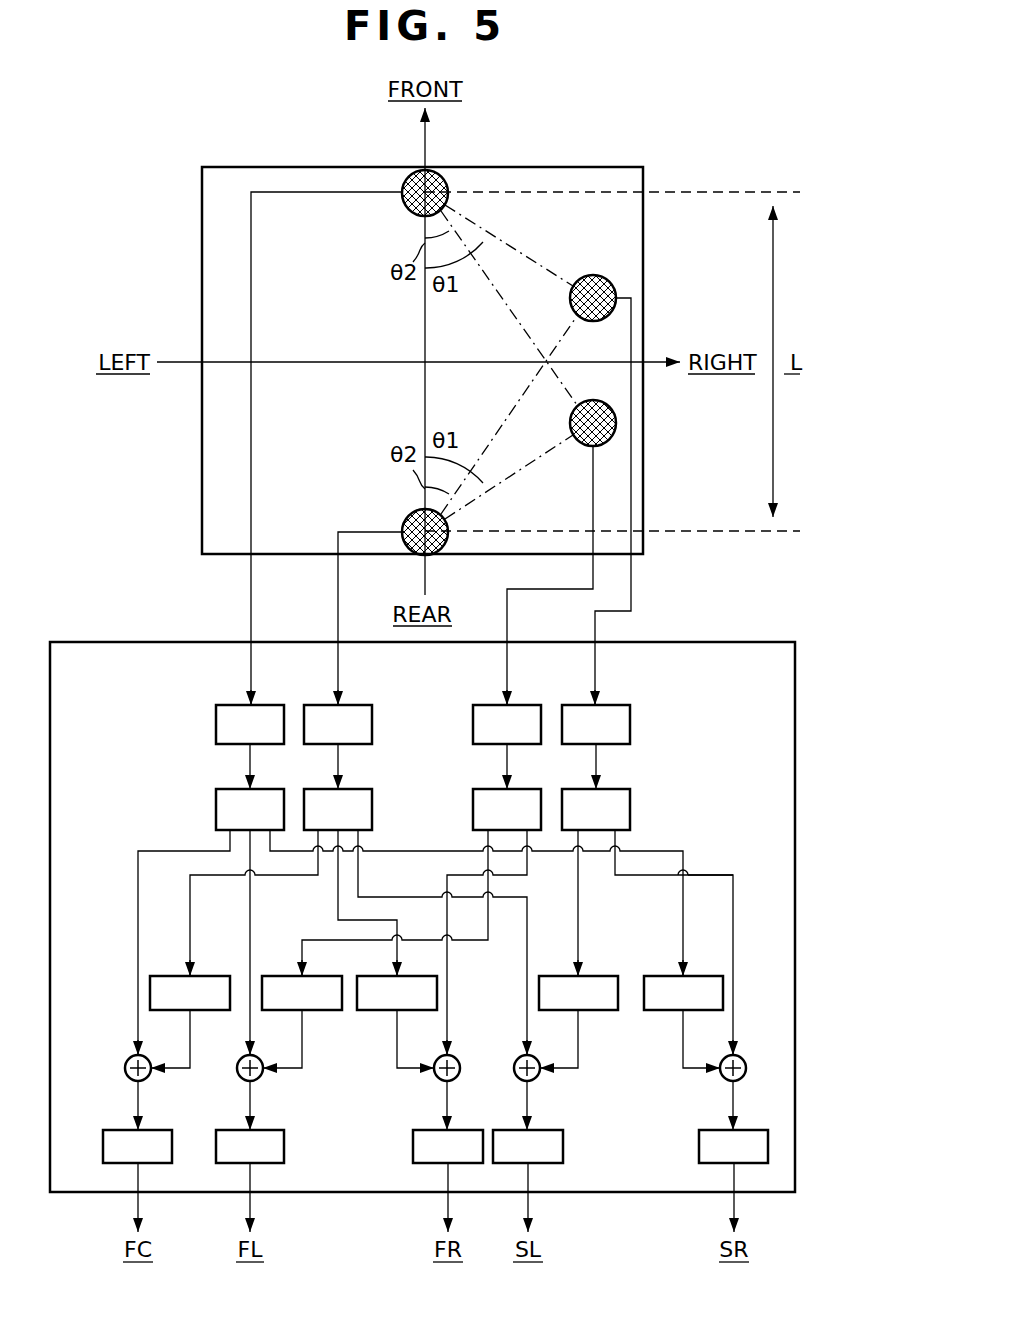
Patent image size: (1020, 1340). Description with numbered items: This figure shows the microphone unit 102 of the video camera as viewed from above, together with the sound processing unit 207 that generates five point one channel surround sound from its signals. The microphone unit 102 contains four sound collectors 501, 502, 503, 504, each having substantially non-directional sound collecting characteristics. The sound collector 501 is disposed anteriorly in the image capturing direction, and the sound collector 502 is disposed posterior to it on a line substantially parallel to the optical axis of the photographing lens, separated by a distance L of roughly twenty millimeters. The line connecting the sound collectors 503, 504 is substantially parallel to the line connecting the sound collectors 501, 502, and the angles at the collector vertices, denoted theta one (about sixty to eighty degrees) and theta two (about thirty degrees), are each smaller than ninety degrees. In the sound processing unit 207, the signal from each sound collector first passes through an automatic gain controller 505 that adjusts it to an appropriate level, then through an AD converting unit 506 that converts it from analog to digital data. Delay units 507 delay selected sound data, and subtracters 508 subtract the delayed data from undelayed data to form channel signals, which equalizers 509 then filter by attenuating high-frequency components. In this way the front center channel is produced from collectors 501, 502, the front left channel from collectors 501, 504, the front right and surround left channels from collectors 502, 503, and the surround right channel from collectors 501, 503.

The microphone unit 102 is at (312, 167).
The sound processing unit 207 is at (138, 642).
The sound collector 501 is at (452, 203).
The sound collector 502 is at (407, 516).
The sound collector 503 is at (591, 275).
The sound collector 504 is at (570, 448).
The automatic gain controller 505 is at (287, 690).
The AD converting unit 506 is at (287, 774).
The delay unit 507 is at (216, 976).
The subtracter 508 is at (127, 1078).
The equalizer 509 is at (172, 1146).